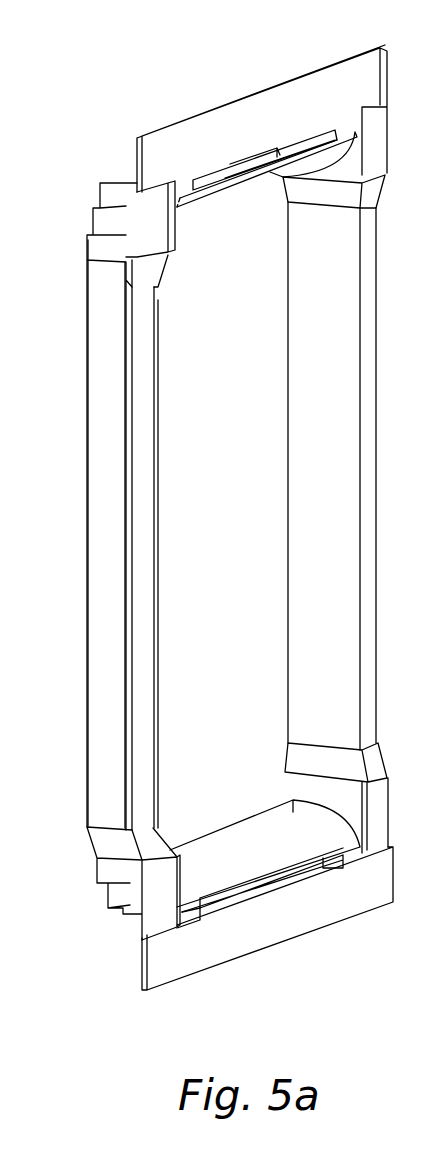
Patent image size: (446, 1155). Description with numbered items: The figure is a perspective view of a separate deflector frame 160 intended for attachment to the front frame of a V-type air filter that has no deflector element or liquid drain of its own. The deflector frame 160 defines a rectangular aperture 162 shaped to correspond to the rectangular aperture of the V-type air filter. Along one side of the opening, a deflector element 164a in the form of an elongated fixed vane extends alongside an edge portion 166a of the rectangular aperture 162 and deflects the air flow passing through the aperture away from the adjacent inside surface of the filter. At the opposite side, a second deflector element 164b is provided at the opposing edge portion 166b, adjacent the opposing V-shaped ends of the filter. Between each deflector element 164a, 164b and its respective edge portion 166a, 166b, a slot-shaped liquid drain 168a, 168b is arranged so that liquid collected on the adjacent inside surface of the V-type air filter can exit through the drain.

The deflector frame 160 is at (240, 517).
The rectangular aperture 162 is at (168, 578).
The deflector element 164a is at (257, 830).
The second deflector element 164b is at (205, 192).
The edge portion 166a is at (270, 892).
The opposing edge portion 166b is at (227, 163).
The liquid drain 168a is at (292, 880).
The liquid drain 168b is at (263, 155).